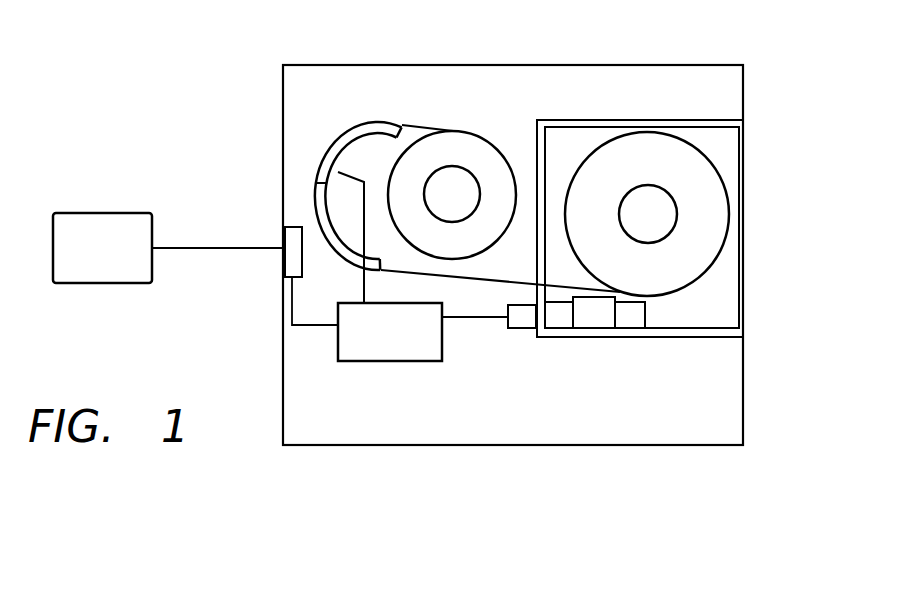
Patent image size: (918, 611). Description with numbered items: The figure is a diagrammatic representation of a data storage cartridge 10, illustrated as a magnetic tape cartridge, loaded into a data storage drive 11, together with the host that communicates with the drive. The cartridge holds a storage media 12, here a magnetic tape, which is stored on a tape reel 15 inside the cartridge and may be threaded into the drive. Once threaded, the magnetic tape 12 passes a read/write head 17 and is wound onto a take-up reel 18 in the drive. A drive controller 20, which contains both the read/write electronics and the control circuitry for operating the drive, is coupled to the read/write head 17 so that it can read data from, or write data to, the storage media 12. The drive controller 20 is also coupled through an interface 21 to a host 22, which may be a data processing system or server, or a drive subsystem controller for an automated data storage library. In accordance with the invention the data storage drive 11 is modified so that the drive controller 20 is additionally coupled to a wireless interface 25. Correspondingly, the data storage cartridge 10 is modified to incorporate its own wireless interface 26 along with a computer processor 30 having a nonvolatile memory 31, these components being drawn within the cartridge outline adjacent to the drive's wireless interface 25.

The data storage cartridge 10 is at (740, 165).
The data storage drive 11 is at (557, 65).
The storage media 12 is at (470, 277).
The tape reel 15 is at (625, 193).
The read/write head 17 is at (342, 152).
The take-up reel 18 is at (456, 166).
The drive controller 20 is at (390, 355).
The interface 21 is at (288, 260).
The host 22 is at (102, 213).
The wireless interface 25 is at (525, 323).
The wireless interface 26 is at (560, 321).
The computer processor 30 is at (597, 321).
The nonvolatile memory 31 is at (637, 317).